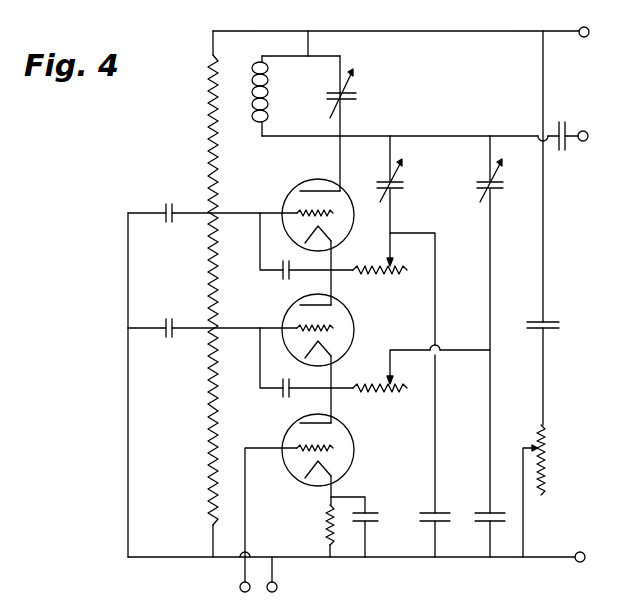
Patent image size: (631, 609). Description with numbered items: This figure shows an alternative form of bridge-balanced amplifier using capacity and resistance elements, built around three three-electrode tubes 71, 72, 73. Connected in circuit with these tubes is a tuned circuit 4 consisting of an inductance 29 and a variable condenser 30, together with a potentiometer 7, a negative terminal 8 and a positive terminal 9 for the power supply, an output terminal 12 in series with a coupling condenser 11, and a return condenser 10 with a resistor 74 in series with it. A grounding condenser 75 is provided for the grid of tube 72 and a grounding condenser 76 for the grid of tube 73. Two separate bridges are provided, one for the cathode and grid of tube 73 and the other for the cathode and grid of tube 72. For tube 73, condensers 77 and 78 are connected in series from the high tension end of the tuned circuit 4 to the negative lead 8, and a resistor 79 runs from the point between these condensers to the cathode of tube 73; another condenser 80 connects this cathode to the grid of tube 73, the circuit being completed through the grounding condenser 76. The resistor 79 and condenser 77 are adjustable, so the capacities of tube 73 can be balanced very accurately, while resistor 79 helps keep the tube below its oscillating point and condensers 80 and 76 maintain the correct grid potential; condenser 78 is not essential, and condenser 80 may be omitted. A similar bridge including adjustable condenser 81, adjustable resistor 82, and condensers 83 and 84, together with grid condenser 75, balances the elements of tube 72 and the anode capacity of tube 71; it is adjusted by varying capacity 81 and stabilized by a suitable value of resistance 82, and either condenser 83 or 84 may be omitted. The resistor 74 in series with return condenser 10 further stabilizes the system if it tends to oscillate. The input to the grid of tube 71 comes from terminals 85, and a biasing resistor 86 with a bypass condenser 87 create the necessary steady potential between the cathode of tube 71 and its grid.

The tuned circuit 4 is at (301, 79).
The potentiometer 7 is at (208, 150).
The negative terminal 8 is at (585, 553).
The positive terminal 9 is at (584, 27).
The return condenser 10 is at (544, 322).
The coupling condenser 11 is at (558, 130).
The output terminal 12 is at (595, 137).
The inductance 29 is at (248, 116).
The variable condenser 30 is at (338, 94).
The three-electrode tube 71 is at (349, 461).
The three-electrode tube 72 is at (349, 341).
The three-electrode tube 73 is at (349, 227).
The resistor 74 is at (546, 467).
The grounding condenser 75 is at (166, 328).
The grounding condenser 76 is at (164, 213).
The adjustable condenser 77 is at (388, 185).
The condenser 78 is at (425, 525).
The resistor 79 is at (395, 283).
The condenser 80 is at (281, 278).
The adjustable condenser 81 is at (486, 185).
The adjustable resistor 82 is at (395, 400).
The condenser 83 is at (480, 513).
The condenser 84 is at (281, 396).
The terminals 85 is at (258, 595).
The biasing resistor 86 is at (326, 515).
The bypass condenser 87 is at (382, 509).